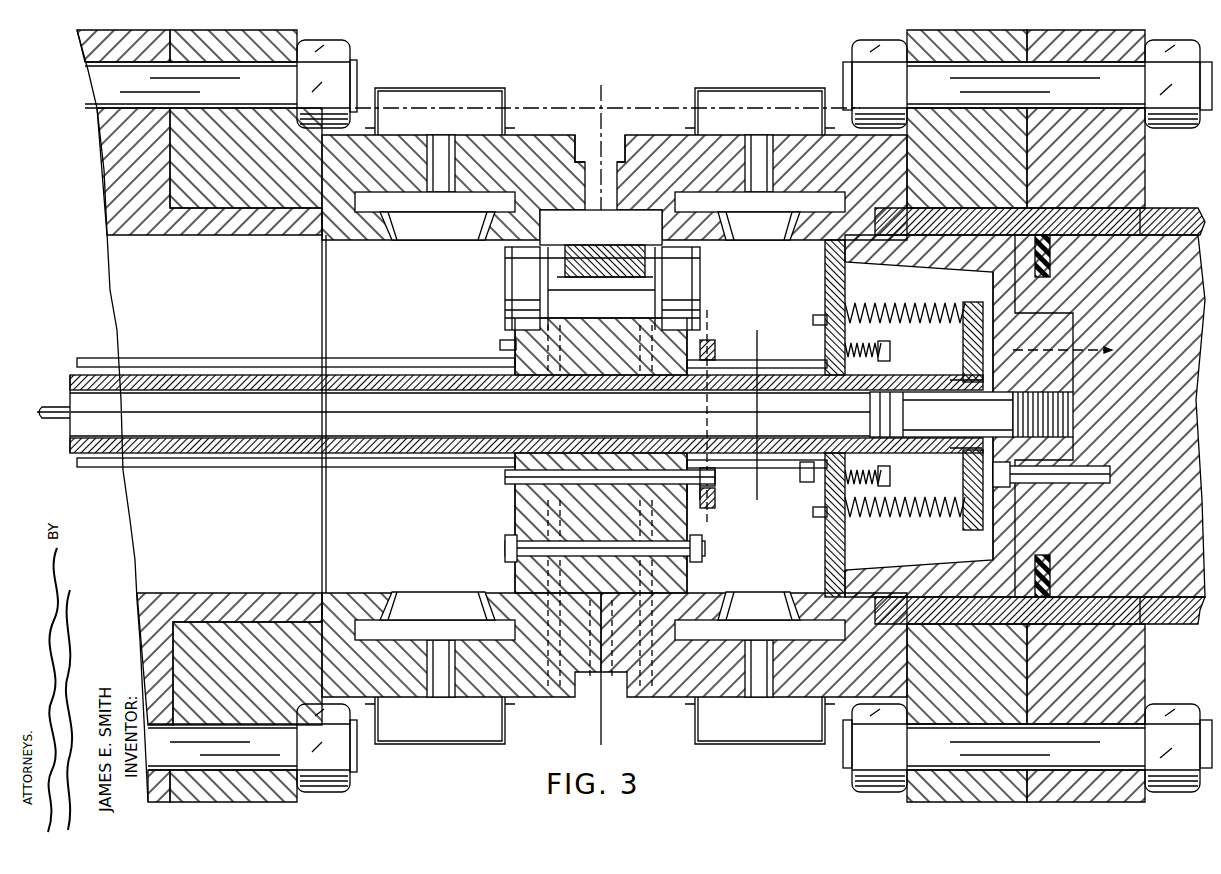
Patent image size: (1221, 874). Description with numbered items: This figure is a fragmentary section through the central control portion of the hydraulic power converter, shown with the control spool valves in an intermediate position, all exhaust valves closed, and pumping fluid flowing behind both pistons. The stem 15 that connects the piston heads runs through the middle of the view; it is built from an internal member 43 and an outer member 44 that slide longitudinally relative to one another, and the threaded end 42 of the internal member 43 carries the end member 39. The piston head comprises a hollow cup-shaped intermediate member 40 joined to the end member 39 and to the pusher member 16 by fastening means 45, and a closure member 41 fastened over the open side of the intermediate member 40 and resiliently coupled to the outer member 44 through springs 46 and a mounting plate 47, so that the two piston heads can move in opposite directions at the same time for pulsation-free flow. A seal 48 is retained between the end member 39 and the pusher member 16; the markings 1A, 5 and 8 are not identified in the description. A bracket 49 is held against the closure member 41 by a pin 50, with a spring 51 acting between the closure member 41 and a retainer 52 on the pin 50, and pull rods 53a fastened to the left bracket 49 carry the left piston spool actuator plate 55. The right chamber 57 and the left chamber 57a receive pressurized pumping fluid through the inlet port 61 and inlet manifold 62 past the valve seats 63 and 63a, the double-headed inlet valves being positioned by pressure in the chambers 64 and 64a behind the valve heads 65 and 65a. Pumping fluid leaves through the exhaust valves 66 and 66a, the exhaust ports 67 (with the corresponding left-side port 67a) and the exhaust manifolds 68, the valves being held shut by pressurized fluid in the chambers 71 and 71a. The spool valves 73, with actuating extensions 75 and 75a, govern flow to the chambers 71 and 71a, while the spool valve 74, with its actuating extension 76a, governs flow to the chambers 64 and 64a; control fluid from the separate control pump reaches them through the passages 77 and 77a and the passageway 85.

The frame plate 1A is at (913, 236).
The clamp bolt 5 is at (335, 84).
The section line 8 is at (600, 95).
The stem 15 is at (730, 331).
The pusher member 16 is at (708, 318).
The end member 39 is at (1073, 330).
The hollow intermediate member 40 is at (1028, 540).
The closure member 41 is at (828, 258).
The end of internal member 42 is at (1073, 394).
The internal member 43 is at (941, 414).
The outer member 44 is at (900, 454).
The fastening means 45 is at (1078, 340).
The springs 46 is at (900, 305).
The mounting plate 47 is at (963, 356).
The seal 48 is at (1047, 240).
The bracket 49 is at (800, 472).
The pin 50 is at (813, 320).
The spring 51 is at (865, 356).
The retainer 52 is at (884, 350).
The pull rods 53a is at (249, 469).
The left piston spool actuator plate 55 is at (715, 482).
The right chamber 57 is at (768, 565).
The left chamber 57a is at (280, 538).
The inlet port 61 is at (620, 152).
The inlet manifold 62 is at (588, 240).
The valve seat 63 is at (690, 305).
The valve seat 63a is at (520, 316).
The chamber 64 is at (647, 272).
The chamber 64a is at (545, 300).
The valve head 65 is at (688, 272).
The valve head 65a is at (538, 272).
The exhaust valve 66 is at (768, 211).
The exhaust valve 66a is at (430, 240).
The exhaust port 67 is at (832, 202).
The washer 67a is at (362, 214).
The exhaust manifold 68 is at (453, 100).
The chamber 71 is at (806, 177).
The chamber 71a is at (425, 182).
The spool valve 73 is at (540, 490).
The spool valve 74 is at (510, 414).
The actuating extension 75 is at (700, 490).
The actuating extension 75a is at (510, 482).
The actuating extension 76a is at (515, 346).
The passage 77 is at (626, 630).
The passage 77a is at (605, 562).
The passageway 85 is at (590, 160).